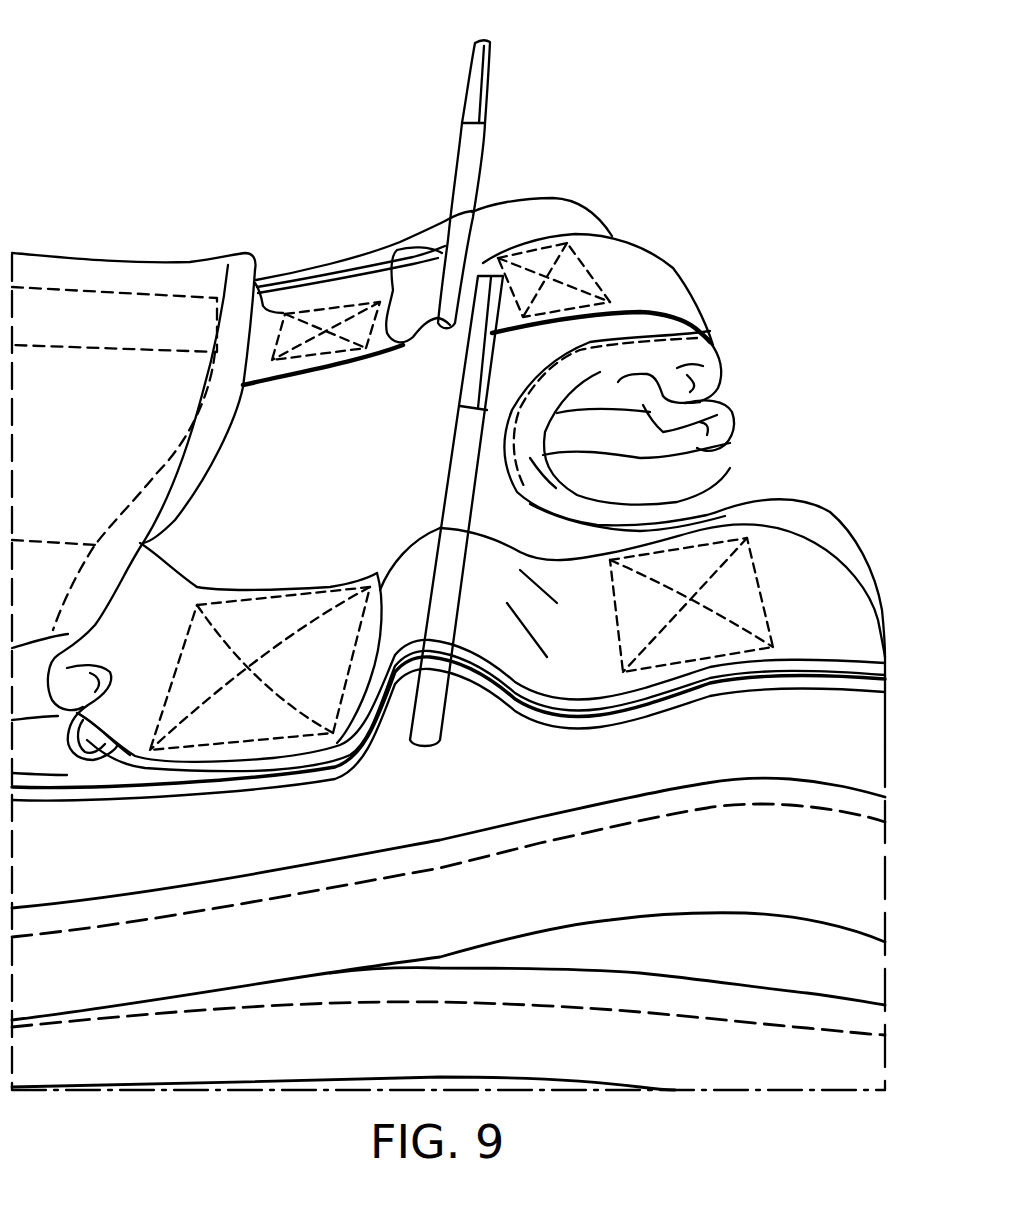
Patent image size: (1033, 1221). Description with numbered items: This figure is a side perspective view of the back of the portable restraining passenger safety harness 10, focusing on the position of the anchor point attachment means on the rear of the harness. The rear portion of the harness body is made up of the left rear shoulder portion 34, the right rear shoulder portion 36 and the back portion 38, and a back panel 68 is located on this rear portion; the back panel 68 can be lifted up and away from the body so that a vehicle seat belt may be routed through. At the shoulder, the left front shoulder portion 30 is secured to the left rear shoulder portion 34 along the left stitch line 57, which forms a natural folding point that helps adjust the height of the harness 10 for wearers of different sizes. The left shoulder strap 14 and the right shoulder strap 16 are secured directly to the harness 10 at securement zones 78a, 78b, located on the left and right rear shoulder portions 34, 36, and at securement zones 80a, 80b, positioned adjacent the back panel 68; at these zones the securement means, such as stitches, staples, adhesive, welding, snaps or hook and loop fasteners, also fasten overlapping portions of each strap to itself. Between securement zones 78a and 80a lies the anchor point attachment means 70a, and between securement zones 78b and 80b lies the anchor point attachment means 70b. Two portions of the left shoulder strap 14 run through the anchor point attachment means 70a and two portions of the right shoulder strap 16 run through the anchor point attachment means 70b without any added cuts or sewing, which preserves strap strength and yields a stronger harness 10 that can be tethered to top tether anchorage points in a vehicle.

The portable restraining passenger safety harness 10 is at (110, 113).
The left shoulder strap 14 is at (660, 300).
The right shoulder strap 16 is at (827, 583).
The left front shoulder portion 30 is at (730, 445).
The left rear shoulder portion 34 is at (543, 212).
The right rear shoulder portion 36 is at (848, 743).
The back portion 38 is at (280, 480).
The left stitch line 57 is at (732, 386).
The back panel 68 is at (120, 370).
The anchor point attachment means 70a is at (489, 48).
The anchor point attachment means 70b is at (452, 488).
The securement zone 78a is at (567, 270).
The securement zone 78b is at (692, 655).
The securement zone 80a is at (320, 335).
The securement zone 80b is at (250, 727).